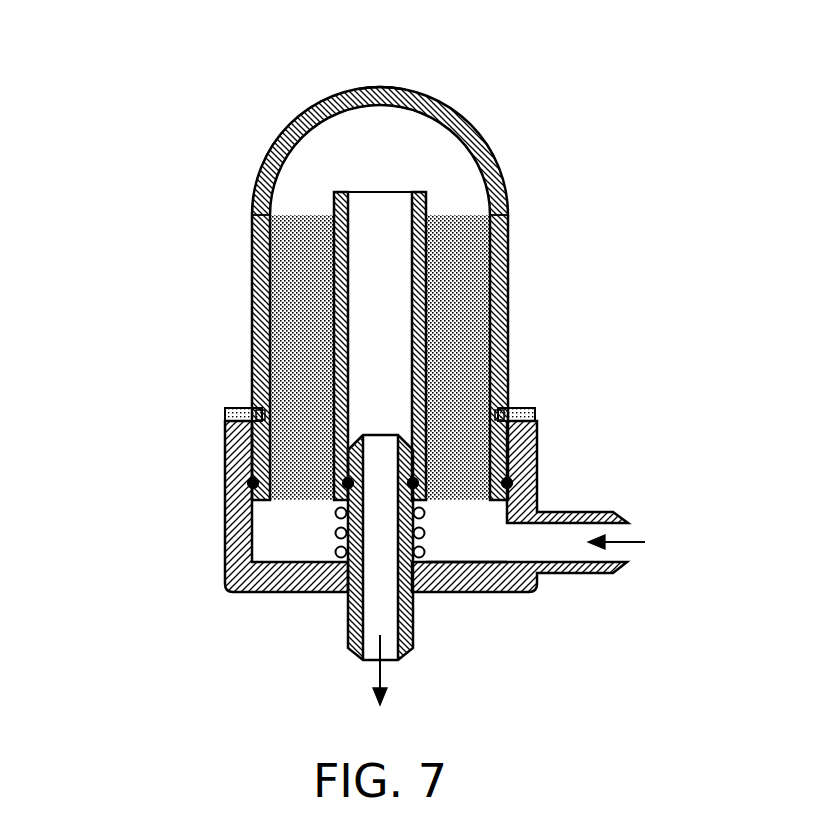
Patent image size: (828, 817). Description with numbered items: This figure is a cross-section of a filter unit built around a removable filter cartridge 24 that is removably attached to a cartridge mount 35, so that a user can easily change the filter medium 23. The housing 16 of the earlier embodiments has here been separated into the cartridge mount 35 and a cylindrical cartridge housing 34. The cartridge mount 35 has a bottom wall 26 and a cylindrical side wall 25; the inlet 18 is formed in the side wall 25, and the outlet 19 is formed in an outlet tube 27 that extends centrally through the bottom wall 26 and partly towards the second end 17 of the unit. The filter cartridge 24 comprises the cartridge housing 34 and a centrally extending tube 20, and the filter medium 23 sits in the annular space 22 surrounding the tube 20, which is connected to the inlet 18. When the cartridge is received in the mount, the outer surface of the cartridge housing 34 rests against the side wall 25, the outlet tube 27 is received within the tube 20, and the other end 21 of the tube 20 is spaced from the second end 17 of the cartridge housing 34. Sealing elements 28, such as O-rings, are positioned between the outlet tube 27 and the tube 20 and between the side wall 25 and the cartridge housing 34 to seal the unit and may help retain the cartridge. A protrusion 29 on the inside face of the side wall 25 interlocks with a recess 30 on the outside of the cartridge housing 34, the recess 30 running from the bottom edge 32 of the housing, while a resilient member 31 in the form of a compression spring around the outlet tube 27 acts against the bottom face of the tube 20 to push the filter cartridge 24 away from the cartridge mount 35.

The housing 16 is at (260, 213).
The second end 17 is at (378, 88).
The inlet 18 is at (628, 550).
The outlet 19 is at (370, 663).
The tube 20 is at (420, 242).
The other end of the tube 21 is at (420, 192).
The annular space 22 is at (382, 357).
The filter medium 23 is at (300, 258).
The removable filter cartridge 24 is at (142, 137).
The side wall 25 is at (523, 462).
The bottom wall 26 is at (266, 578).
The outlet tube 27 is at (352, 630).
The sealing elements 28 is at (250, 483).
The protrusion 29 is at (260, 413).
The recess 30 is at (262, 414).
The resilient member 31 is at (427, 540).
The bottom edge 32 is at (467, 502).
The cartridge housing 34 is at (273, 157).
The cartridge mount 35 is at (240, 462).